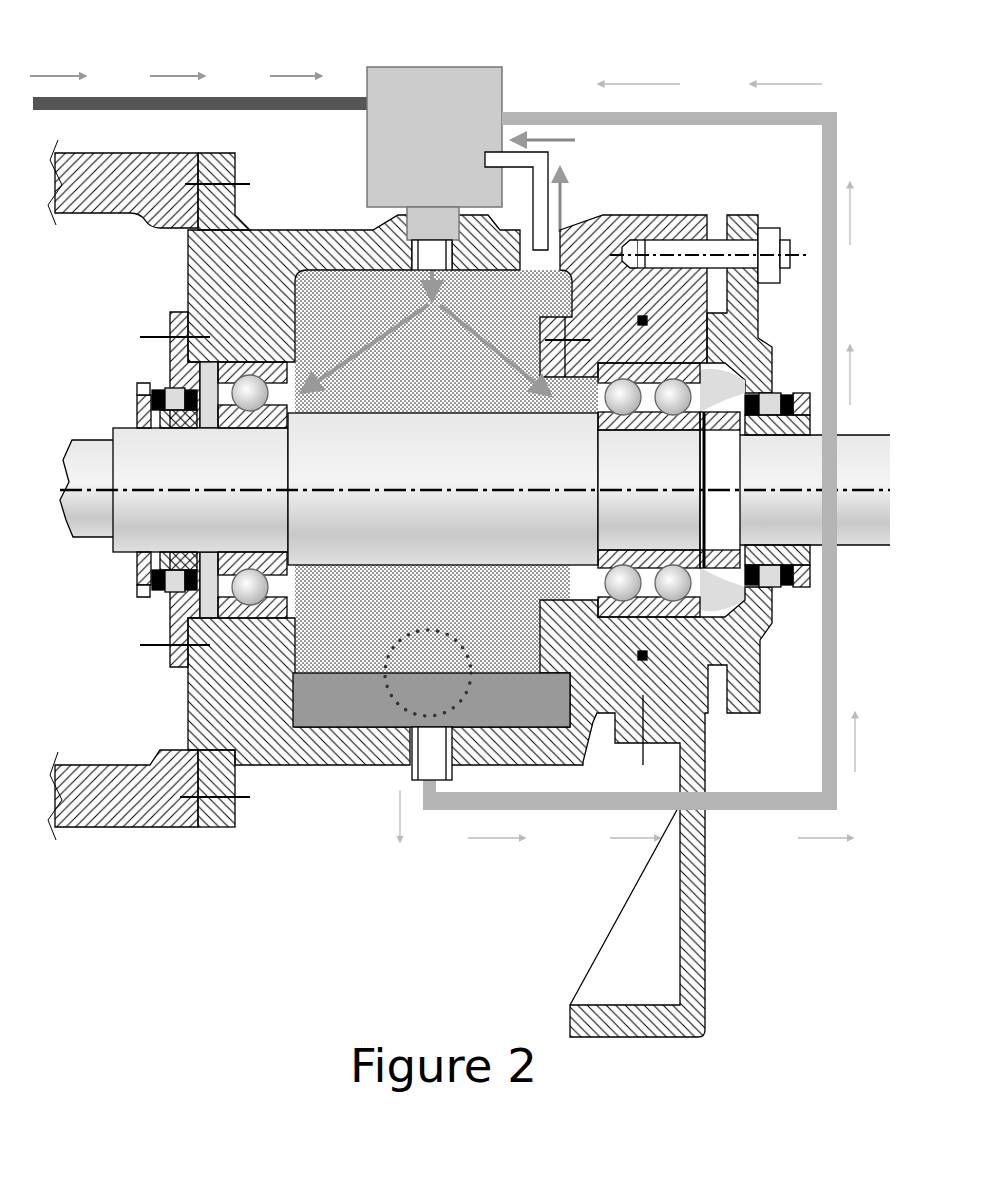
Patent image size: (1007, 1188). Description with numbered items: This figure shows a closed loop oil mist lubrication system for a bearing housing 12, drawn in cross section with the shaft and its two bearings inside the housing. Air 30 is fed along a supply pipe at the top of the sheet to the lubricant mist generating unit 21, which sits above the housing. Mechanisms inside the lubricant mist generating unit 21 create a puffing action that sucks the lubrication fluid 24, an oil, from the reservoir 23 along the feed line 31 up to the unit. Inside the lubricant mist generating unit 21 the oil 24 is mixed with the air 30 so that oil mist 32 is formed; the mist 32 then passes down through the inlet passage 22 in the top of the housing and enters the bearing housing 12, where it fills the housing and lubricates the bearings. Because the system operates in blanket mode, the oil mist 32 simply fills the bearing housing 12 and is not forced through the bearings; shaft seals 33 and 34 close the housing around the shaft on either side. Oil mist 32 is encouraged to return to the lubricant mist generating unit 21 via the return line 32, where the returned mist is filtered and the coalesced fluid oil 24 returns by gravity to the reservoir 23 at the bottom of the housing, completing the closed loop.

The bearing housing 12 is at (255, 750).
The lubricant mist generating unit 21 is at (465, 90).
The lubricant inlet passage 22 is at (430, 260).
The reservoir 23 is at (370, 712).
The lubrication fluid 24 is at (500, 705).
The air 30 is at (128, 97).
The feed line 31 is at (710, 112).
The oil mist 32 is at (540, 167).
The shaft seal 33 is at (140, 574).
The shaft seal 34 is at (815, 572).